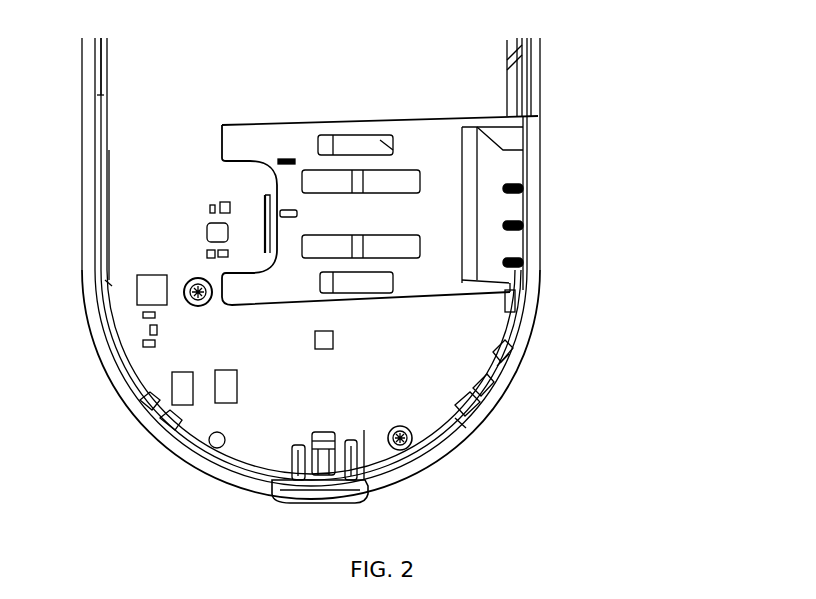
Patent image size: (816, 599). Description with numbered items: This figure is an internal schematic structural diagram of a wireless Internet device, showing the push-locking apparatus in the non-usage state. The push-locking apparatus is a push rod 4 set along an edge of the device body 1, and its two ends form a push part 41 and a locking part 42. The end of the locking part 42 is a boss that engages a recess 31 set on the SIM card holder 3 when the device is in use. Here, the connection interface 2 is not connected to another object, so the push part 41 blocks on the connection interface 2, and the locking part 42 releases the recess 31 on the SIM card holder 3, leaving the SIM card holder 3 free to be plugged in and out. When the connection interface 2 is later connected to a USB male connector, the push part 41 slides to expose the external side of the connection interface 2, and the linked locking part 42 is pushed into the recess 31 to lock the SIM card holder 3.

The device body 1 is at (467, 79).
The connection interface 2 is at (280, 469).
The SIM card holder 3 is at (468, 197).
The recess 31 is at (507, 262).
The push rod 4 is at (493, 412).
The push part 41 is at (360, 483).
The locking part 42 is at (503, 350).